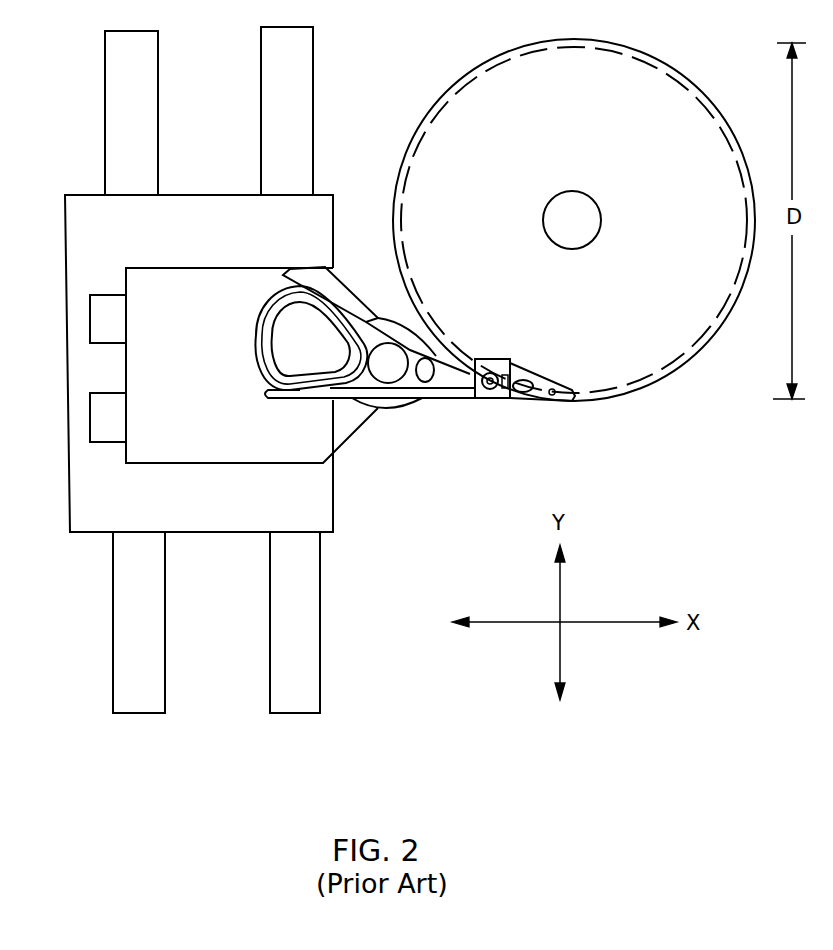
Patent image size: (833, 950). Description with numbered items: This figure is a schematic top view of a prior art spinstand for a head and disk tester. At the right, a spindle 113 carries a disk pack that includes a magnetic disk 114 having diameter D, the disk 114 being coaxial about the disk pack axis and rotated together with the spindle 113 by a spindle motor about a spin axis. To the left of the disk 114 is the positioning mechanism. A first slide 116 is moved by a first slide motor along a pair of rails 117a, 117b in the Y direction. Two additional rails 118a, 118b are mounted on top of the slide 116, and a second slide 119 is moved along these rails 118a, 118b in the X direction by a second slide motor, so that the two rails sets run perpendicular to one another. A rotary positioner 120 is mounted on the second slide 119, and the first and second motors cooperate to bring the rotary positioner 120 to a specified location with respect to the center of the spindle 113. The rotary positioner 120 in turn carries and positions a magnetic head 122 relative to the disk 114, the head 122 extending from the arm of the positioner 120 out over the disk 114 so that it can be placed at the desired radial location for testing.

The spindle 113 is at (577, 207).
The magnetic disk 114 is at (472, 108).
The slide 116 is at (192, 227).
The rail 117a is at (142, 620).
The rail 117b is at (303, 618).
The rail 118a is at (108, 422).
The rail 118b is at (105, 315).
The second slide 119 is at (300, 440).
The rotary positioner 120 is at (390, 400).
The magnetic head 122 is at (568, 398).